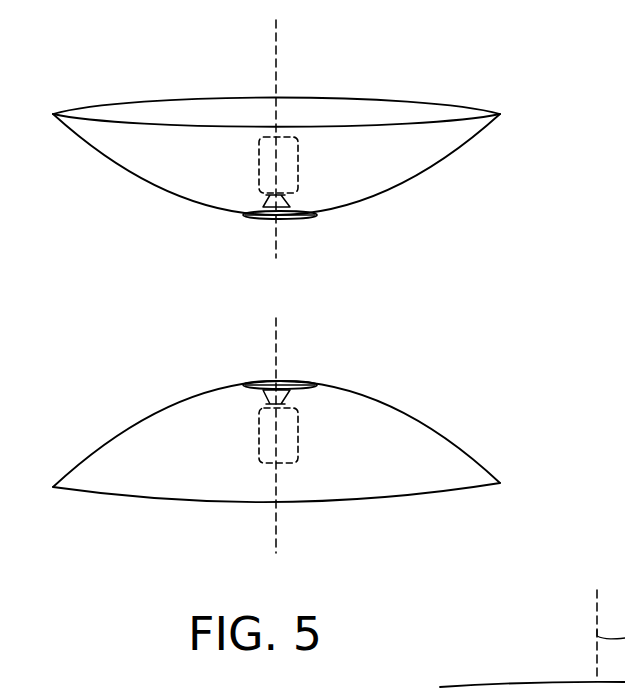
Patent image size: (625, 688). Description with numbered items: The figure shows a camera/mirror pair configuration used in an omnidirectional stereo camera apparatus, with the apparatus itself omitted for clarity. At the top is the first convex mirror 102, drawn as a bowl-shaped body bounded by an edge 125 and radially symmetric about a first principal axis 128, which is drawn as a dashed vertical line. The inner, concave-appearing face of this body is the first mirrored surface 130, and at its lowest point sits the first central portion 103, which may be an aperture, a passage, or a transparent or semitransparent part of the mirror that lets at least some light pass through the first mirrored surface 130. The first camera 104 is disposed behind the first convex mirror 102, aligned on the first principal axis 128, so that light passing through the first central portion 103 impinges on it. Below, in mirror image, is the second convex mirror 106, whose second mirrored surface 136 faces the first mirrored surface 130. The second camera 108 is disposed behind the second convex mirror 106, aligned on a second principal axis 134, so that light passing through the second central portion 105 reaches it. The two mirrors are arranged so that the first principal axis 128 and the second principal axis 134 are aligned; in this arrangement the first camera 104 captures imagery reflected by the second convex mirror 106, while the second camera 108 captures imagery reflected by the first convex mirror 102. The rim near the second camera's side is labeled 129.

The first convex mirror 102 is at (368, 205).
The first central portion 103 is at (242, 215).
The first camera 104 is at (257, 157).
The second central portion 105 is at (244, 381).
The second convex mirror 106 is at (417, 415).
The second camera 108 is at (293, 419).
The edge 125 is at (503, 110).
The first principal axis 128 is at (277, 68).
The rim of upper shell 129 is at (498, 483).
The first mirrored surface 130 is at (368, 179).
The second principal axis 134 is at (277, 350).
The second mirrored surface 136 is at (183, 477).